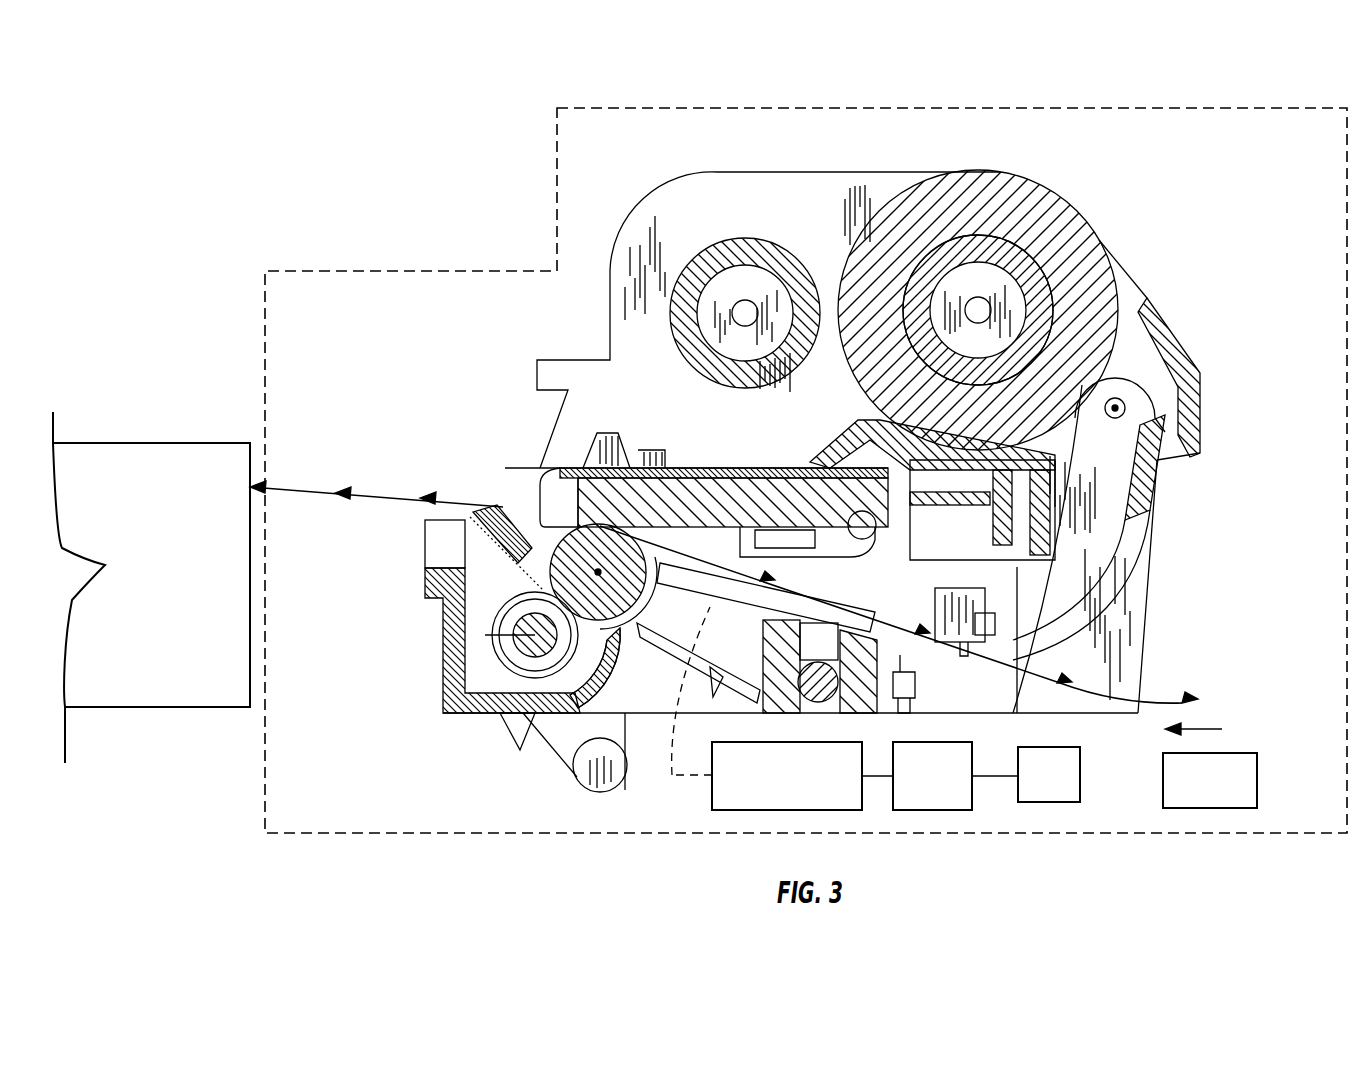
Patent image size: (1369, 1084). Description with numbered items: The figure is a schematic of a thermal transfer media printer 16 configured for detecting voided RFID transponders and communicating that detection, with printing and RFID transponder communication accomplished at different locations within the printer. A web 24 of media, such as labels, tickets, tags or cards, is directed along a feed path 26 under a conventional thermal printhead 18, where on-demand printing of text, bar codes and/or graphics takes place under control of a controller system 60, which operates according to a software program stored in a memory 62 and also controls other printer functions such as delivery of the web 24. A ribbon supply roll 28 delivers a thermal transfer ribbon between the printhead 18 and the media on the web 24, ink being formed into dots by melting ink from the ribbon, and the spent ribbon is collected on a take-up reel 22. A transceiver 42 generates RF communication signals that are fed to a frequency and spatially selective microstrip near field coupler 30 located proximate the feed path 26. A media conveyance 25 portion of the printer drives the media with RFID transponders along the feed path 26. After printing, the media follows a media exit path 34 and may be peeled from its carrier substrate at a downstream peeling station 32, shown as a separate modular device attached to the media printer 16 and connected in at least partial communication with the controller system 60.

The media printer 16 is at (390, 271).
The thermal printhead 18 is at (508, 512).
The take-up reel 22 is at (740, 257).
The web 24 is at (1182, 703).
The media conveyance 25 is at (1210, 780).
The feed path 26 is at (1209, 730).
The ribbon supply roll 28 is at (1023, 200).
The microstrip near field coupler 30 is at (660, 548).
The peeling station 32 is at (151, 587).
The media exit path 34 is at (363, 492).
The transceiver 42 is at (787, 776).
The controller system 60 is at (932, 776).
The memory 62 is at (1049, 774).